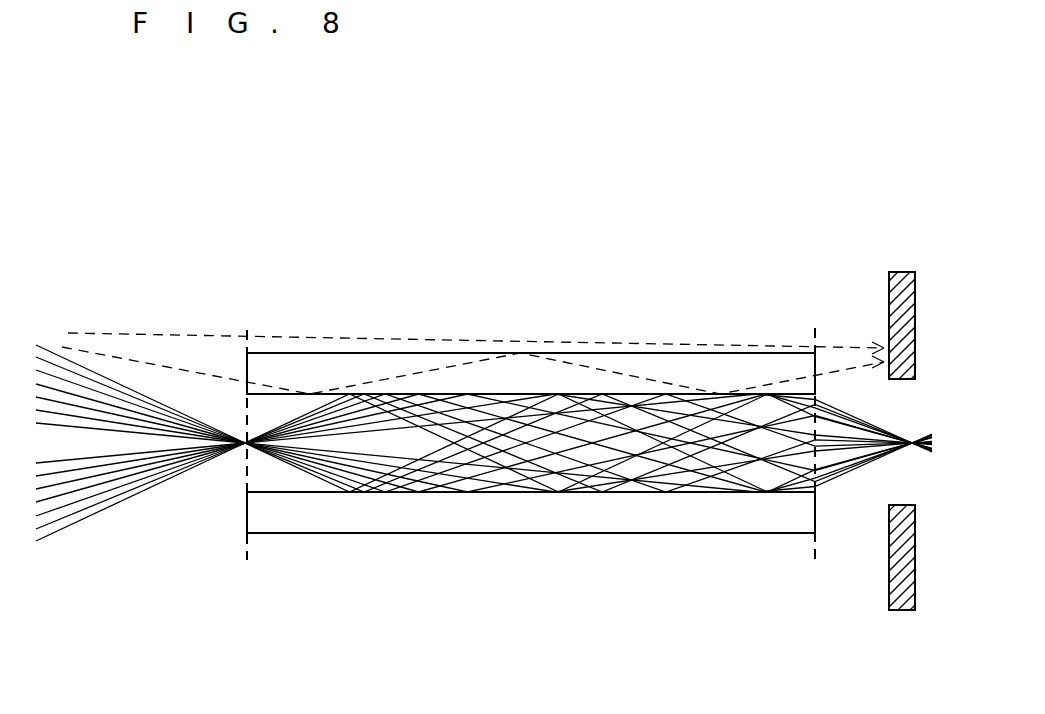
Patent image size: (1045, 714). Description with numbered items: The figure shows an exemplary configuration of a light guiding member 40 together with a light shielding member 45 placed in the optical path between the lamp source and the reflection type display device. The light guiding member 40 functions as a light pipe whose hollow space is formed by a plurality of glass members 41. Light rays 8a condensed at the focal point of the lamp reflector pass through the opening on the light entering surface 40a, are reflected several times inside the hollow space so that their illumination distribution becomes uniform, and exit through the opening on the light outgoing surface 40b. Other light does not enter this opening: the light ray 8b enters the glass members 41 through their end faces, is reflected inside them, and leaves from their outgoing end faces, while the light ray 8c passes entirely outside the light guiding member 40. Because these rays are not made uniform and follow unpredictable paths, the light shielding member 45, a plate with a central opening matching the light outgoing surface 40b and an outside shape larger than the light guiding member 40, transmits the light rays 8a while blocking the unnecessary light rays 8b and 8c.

The light rays 8a is at (87, 520).
The light ray 8b is at (97, 352).
The light ray 8c is at (205, 333).
The light guiding member 40 is at (493, 450).
The light entering surface 40a is at (247, 557).
The light outgoing surface 40b is at (812, 546).
The glass members 41 is at (320, 368).
The light shielding member 45 is at (888, 300).